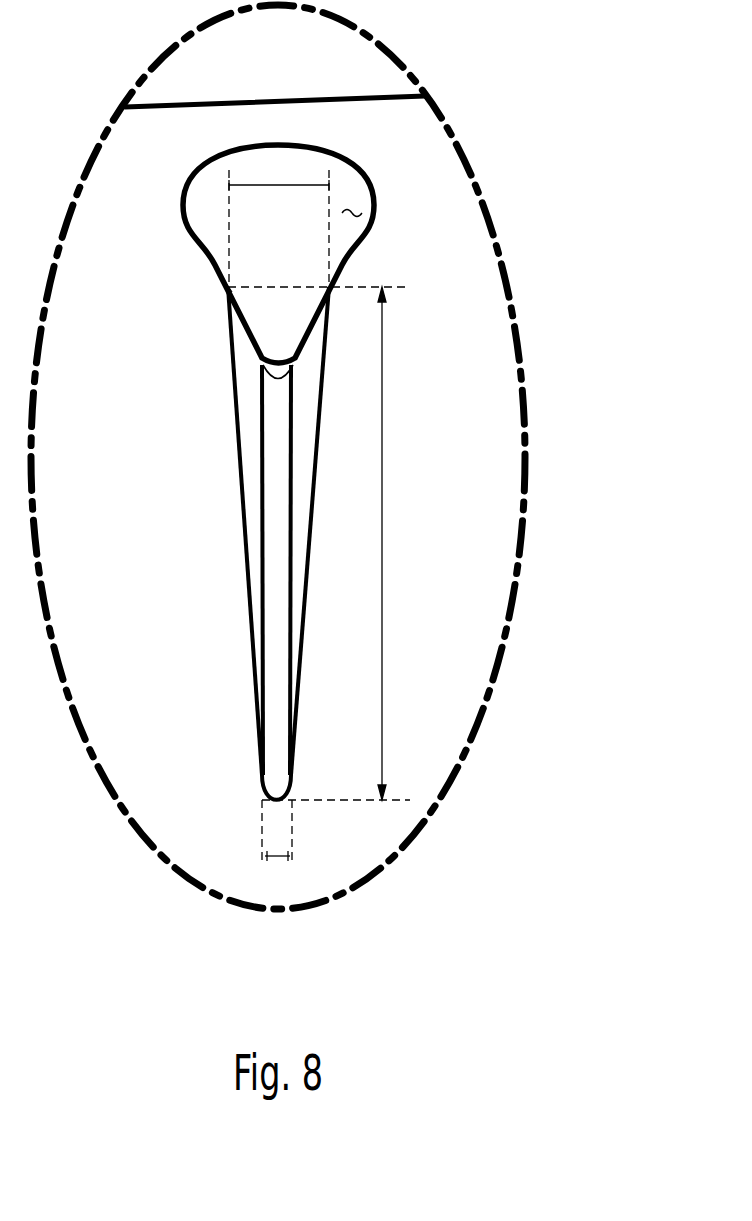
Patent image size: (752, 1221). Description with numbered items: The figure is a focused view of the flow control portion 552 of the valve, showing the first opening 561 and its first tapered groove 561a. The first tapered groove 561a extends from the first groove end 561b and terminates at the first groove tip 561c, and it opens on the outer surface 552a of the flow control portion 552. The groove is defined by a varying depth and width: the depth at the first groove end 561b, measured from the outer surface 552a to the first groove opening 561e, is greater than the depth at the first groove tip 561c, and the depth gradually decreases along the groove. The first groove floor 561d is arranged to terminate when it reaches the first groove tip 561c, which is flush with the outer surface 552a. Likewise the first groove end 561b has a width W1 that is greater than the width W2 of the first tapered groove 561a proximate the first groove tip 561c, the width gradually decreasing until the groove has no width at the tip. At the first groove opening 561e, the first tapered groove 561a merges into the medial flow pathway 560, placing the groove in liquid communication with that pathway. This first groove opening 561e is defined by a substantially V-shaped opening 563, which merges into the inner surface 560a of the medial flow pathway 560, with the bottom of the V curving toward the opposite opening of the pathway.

The flow control portion 552 is at (492, 90).
The outer surface 552a is at (185, 800).
The medial flow pathway 560 is at (206, 208).
The inner surface 560a is at (357, 207).
The first opening 561 is at (275, 169).
The first tapered groove 561a is at (382, 545).
The first groove end 561b is at (368, 287).
The first groove tip 561c is at (325, 801).
The first groove floor 561d is at (273, 667).
The first groove opening 561e is at (262, 367).
The V-shaped opening 563 is at (258, 291).
The width of first groove opening W1 is at (291, 185).
The width of first tapered groove proximate first groove tip W2 is at (280, 857).